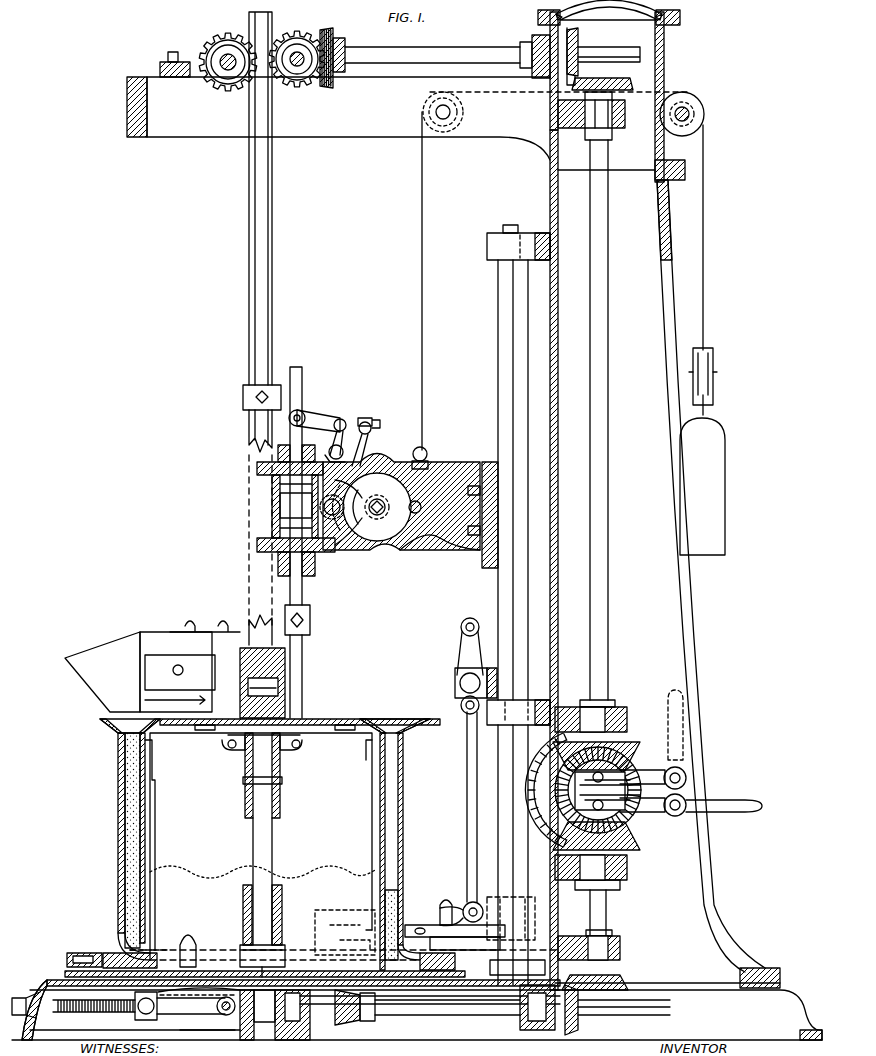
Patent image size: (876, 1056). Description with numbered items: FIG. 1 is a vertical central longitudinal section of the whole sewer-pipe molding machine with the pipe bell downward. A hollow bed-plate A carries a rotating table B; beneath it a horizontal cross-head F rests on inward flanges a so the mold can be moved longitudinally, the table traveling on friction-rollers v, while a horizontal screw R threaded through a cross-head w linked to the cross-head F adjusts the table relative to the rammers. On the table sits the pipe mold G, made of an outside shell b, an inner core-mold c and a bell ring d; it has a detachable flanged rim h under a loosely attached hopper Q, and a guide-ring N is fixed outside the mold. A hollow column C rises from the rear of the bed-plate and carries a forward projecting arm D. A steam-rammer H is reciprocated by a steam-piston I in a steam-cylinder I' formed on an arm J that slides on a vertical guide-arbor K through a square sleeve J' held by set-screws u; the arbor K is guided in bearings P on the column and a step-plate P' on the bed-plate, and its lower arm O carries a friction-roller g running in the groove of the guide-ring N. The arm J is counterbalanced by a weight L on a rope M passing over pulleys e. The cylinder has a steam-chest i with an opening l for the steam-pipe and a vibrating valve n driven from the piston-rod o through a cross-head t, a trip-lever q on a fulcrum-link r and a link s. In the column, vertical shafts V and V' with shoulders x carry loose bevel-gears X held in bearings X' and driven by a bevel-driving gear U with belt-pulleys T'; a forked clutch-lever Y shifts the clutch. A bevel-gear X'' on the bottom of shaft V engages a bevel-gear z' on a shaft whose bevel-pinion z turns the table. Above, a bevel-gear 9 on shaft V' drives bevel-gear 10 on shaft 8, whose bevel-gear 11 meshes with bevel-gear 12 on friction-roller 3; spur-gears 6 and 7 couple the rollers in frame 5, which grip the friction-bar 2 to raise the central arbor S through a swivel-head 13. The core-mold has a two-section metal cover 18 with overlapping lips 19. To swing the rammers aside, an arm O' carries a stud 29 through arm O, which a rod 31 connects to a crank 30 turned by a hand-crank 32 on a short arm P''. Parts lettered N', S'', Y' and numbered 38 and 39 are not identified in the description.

The friction-bar 2 is at (266, 328).
The friction-roller 3 is at (304, 59).
The horizontal frame 5 is at (178, 64).
The spur-gear 6 is at (227, 50).
The spur-gear 7 is at (296, 46).
The horizontal shaft 8 is at (441, 56).
The bevel-gear 9 is at (599, 103).
The bevel-gear 10 is at (603, 56).
The bevel-gear 11 is at (337, 51).
The bevel-gear 12 is at (232, 69).
The swivel-head 13 is at (253, 683).
The metal cover 18 is at (264, 726).
The overlapping lips 19 is at (211, 950).
The vertical stud 29 is at (460, 907).
The crank 30 is at (470, 692).
The rod 31 is at (483, 807).
The hand-crank 32 is at (478, 646).
The hub 38 is at (262, 957).
The pin 39 is at (276, 963).
The bed-plate A is at (420, 1019).
The table B is at (417, 1001).
The hollow vertical column C is at (659, 495).
The forward projecting arm D is at (338, 118).
The cross-head F is at (295, 1016).
The sewer-pipe mold G is at (312, 848).
The steam-rammer H is at (303, 676).
The steam-piston I is at (296, 510).
The steam-cylinder I' is at (296, 507).
The arm J is at (401, 513).
The square opening-sleeve J' is at (487, 507).
The guide-arbor K is at (502, 622).
The weight L is at (702, 451).
The rope M is at (565, 280).
The guide-ring N is at (444, 961).
The block N' is at (84, 951).
The arm O is at (511, 918).
The arm O' is at (455, 939).
The bearing P is at (518, 475).
The step-plate P' is at (517, 968).
The short arm P'' is at (466, 683).
The hopper Q is at (152, 666).
The horizontal central screw R is at (94, 1016).
The vertical central arbor S is at (262, 850).
The nut S'' is at (263, 687).
The belt-pulleys T' is at (588, 790).
The bevel-driving gear U is at (620, 793).
The vertical shaft V is at (598, 851).
The vertical shaft V' is at (605, 420).
The bevel-gear X is at (598, 805).
The bearing X' is at (599, 796).
The bevel-gear X'' is at (602, 977).
The forked clutch-lever Y is at (706, 812).
The handle Y' is at (668, 739).
The inward flat flange a is at (266, 1028).
The outside shell b is at (261, 851).
The core-mold c is at (256, 845).
The ring d is at (150, 953).
The pulleys e is at (688, 114).
The friction-roller g is at (345, 937).
The detachable rim h is at (259, 725).
The circular steam-chest i is at (377, 501).
The opening l is at (444, 112).
The vibrating valve n is at (367, 512).
The piston-rod o is at (298, 492).
The two-armed trip-lever q is at (321, 414).
The fulcrum-link r is at (333, 446).
The link s is at (366, 442).
The cross-head t is at (298, 410).
The set-screws u is at (471, 514).
The friction-rollers v is at (366, 1012).
The threaded cross-head w is at (185, 1013).
The shoulder x is at (332, 507).
The bevel-pinion z is at (522, 1010).
The bevel-gear z' is at (577, 1014).